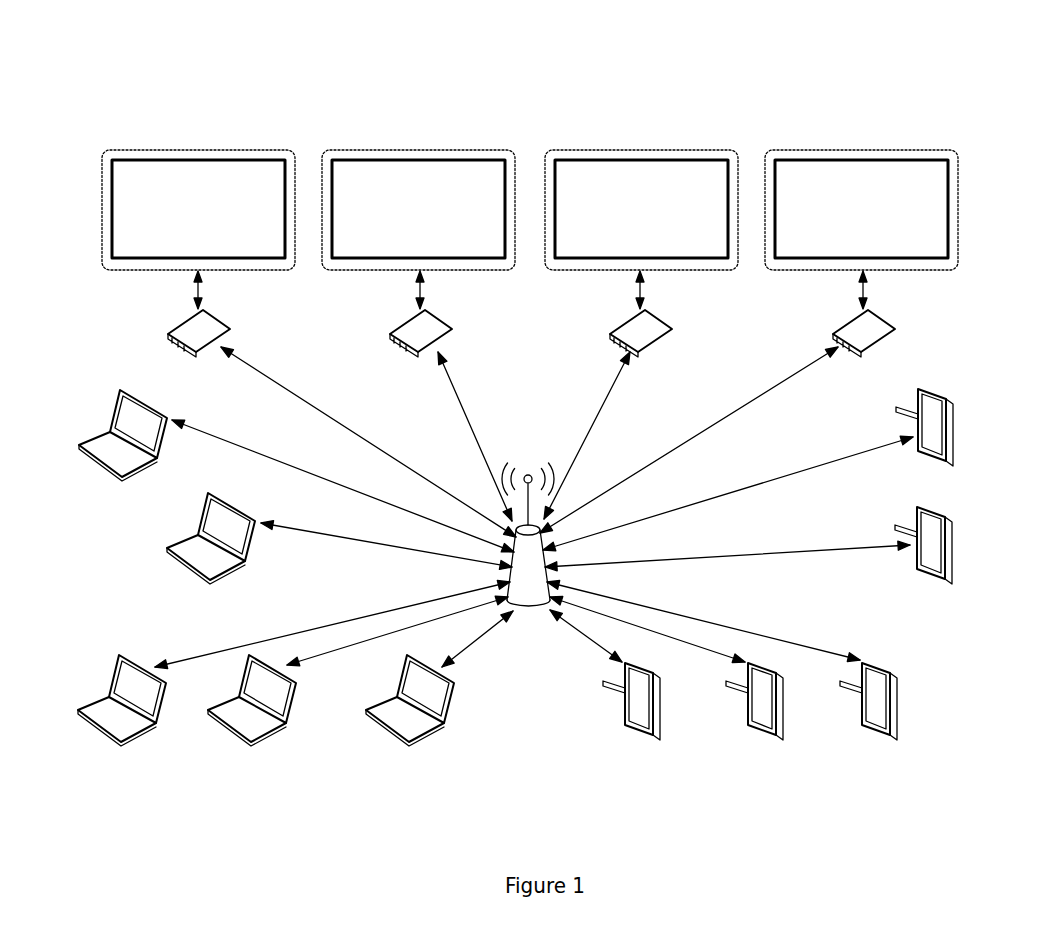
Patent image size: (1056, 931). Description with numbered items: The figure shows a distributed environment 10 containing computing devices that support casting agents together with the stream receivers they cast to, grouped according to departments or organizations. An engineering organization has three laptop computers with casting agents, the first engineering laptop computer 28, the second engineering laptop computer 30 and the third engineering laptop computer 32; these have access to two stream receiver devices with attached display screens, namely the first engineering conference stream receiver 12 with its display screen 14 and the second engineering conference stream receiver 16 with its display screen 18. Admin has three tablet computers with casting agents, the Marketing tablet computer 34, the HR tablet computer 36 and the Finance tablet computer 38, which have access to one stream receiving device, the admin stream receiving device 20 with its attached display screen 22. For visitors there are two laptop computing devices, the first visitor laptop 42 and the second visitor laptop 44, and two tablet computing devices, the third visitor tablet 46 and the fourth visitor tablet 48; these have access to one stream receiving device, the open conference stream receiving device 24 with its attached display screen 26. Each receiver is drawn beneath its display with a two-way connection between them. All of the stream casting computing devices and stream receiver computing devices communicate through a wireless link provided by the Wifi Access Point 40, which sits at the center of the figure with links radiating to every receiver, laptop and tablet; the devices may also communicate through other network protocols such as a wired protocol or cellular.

The distributed environment 10 is at (957, 75).
The stream receiver (Engineering Conf 1) 12 is at (168, 320).
The display screen (Engineering Conf 1) 14 is at (207, 148).
The stream receiver (Engineering Conf 2) 16 is at (390, 320).
The display screen (Engineering Conf 2) 18 is at (429, 148).
The stream receiving device (Admin 1) 20 is at (613, 320).
The display screen (Admin 1) 22 is at (649, 148).
The stream receiving device (Open Conf) 24 is at (830, 320).
The display screen (Open Conf) 26 is at (870, 148).
The laptop computer (Engineering 1) 28 is at (121, 745).
The laptop computer (Engineering 2) 30 is at (252, 745).
The laptop computer (Engineering 3) 32 is at (411, 745).
The tablet computer (Marketing) 34 is at (636, 743).
The tablet computer (HR) 36 is at (760, 743).
The tablet computer (Finance) 38 is at (875, 743).
The Wifi Access Point 40 is at (541, 608).
The visitor laptop computing device (Visitor 1) 42 is at (122, 482).
The visitor laptop computing device (Visitor 2) 44 is at (208, 585).
The visitor tablet computing device (Visitor 3) 46 is at (930, 471).
The visitor tablet computing device (Visitor 4) 48 is at (928, 588).